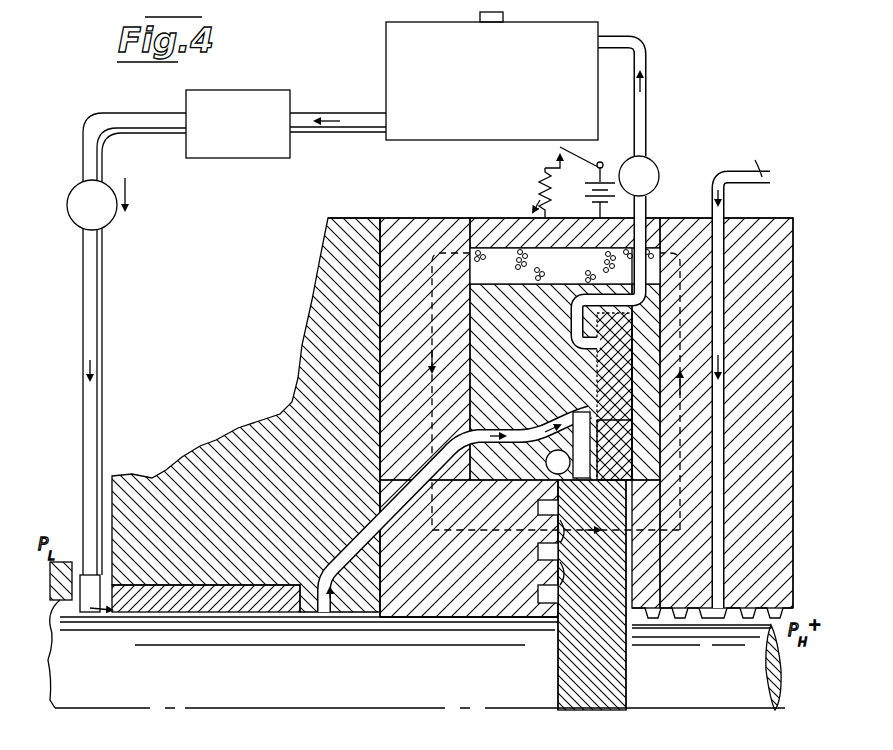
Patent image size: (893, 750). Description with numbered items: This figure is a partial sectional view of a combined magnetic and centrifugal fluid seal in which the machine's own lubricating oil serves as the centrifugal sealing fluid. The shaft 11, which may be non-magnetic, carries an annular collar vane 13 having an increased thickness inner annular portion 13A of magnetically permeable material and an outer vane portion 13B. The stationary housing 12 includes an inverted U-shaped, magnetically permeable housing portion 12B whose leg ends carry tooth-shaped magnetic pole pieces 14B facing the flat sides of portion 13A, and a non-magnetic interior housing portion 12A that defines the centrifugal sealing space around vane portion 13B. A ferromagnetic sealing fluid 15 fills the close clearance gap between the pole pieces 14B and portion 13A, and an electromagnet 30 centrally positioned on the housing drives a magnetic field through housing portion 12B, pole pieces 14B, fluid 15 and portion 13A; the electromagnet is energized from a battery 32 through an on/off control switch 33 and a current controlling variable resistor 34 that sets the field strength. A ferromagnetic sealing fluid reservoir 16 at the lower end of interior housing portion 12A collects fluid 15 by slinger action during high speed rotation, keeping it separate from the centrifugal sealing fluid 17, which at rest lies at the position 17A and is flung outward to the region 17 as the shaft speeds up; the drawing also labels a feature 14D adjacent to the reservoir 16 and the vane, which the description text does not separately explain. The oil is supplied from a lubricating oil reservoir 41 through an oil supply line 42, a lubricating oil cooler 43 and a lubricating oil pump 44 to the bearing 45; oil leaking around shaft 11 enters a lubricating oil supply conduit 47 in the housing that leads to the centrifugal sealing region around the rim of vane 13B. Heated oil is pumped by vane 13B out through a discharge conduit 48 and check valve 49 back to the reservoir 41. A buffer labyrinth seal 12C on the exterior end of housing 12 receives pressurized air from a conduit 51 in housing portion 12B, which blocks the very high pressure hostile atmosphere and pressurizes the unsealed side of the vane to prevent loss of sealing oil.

The shaft 11 is at (68, 693).
The stationary housing 12 is at (699, 215).
The interior housing portion 12A is at (528, 348).
The inverted U-shaped housing portion 12B is at (414, 413).
The buffer labyrinth seal 12C is at (740, 622).
The annular collar vane 13 is at (582, 706).
The inner annular increased thickness portion 13A is at (604, 675).
The outer vane portion 13B is at (593, 507).
The magnetic pole pieces 14B is at (540, 553).
The bearing oil inlet 14D is at (546, 463).
The ferromagnetic sealing fluid 15 is at (560, 540).
The ferromagnetic sealing fluid reservoir 16 is at (555, 415).
The centrifugal sealing fluid 17 is at (614, 396).
The rest position of centrifugal sealing fluid 17A is at (622, 436).
The electromagnet 30 is at (505, 273).
The battery 32 is at (587, 193).
The on/off control switch 33 is at (600, 160).
The variable resistor 34 is at (539, 188).
The lubricating oil reservoir 41 is at (397, 78).
The oil supply line 42 is at (332, 130).
The lubricating oil cooler 43 is at (208, 158).
The lubricating oil pump 44 is at (113, 213).
The bearing 45 is at (196, 585).
The lubricating oil supply conduit 47 is at (345, 537).
The discharge conduit 48 is at (645, 56).
The check valve 49 is at (650, 160).
The air supply conduit 51 is at (728, 168).